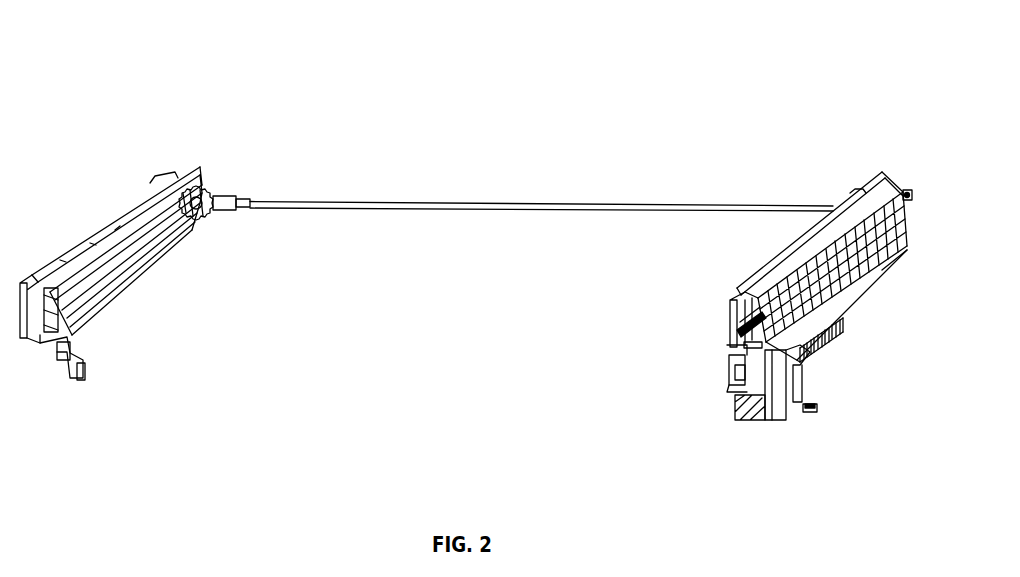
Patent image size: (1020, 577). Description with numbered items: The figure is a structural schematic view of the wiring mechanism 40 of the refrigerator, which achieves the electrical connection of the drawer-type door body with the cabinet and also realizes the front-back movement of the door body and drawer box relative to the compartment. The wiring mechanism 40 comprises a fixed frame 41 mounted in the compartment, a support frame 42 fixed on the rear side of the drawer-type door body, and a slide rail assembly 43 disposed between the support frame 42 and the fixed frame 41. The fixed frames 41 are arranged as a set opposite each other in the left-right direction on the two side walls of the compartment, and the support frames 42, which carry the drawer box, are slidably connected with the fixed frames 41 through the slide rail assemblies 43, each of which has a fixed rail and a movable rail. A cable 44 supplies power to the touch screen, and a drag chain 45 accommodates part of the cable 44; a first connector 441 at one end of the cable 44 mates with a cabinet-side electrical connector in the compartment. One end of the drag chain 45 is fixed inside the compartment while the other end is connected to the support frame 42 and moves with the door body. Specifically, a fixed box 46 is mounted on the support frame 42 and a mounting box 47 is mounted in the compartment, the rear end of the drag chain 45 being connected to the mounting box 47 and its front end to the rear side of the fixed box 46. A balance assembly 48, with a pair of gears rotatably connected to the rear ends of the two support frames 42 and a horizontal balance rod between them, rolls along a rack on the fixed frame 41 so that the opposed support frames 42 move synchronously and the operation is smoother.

The wiring mechanism 40 is at (528, 58).
The fixed frame 41 is at (37, 343).
The support frame 42 is at (127, 196).
The slide rail assembly 43 is at (737, 322).
The cable 44 is at (790, 410).
The first connector 441 is at (818, 410).
The drag chain 45 is at (834, 337).
The fixed box 46 is at (736, 374).
The mounting box 47 is at (740, 407).
The balance assembly 48 is at (207, 193).